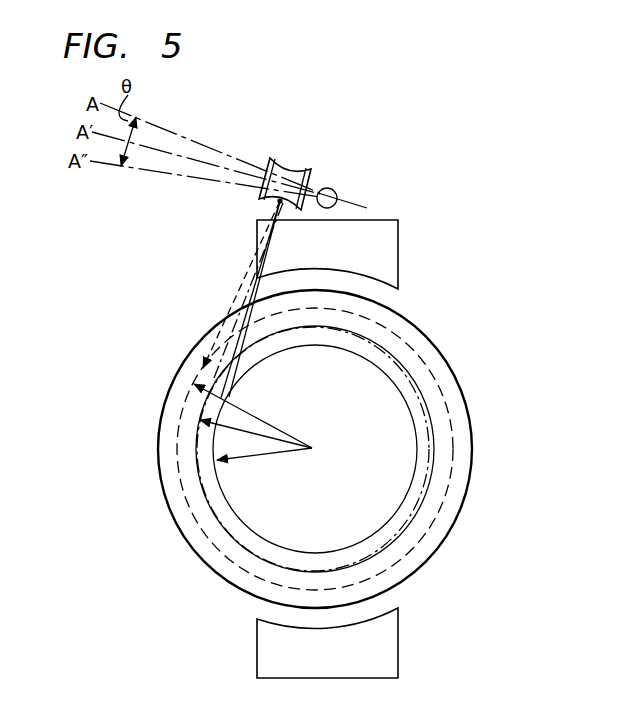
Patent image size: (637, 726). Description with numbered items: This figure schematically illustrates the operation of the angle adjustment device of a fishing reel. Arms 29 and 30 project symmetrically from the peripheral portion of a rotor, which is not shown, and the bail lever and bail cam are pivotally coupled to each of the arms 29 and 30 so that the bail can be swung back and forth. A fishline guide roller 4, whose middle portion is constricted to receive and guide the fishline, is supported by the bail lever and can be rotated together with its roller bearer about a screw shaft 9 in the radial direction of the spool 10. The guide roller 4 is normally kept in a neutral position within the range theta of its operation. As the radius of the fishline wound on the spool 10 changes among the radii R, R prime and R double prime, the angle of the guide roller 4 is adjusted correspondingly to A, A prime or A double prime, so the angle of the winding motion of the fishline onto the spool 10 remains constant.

The fishline guide roller 4 is at (281, 164).
The screw shaft 9 is at (333, 190).
The spool 10 is at (459, 364).
The arm 29 is at (398, 252).
The arm 30 is at (257, 642).